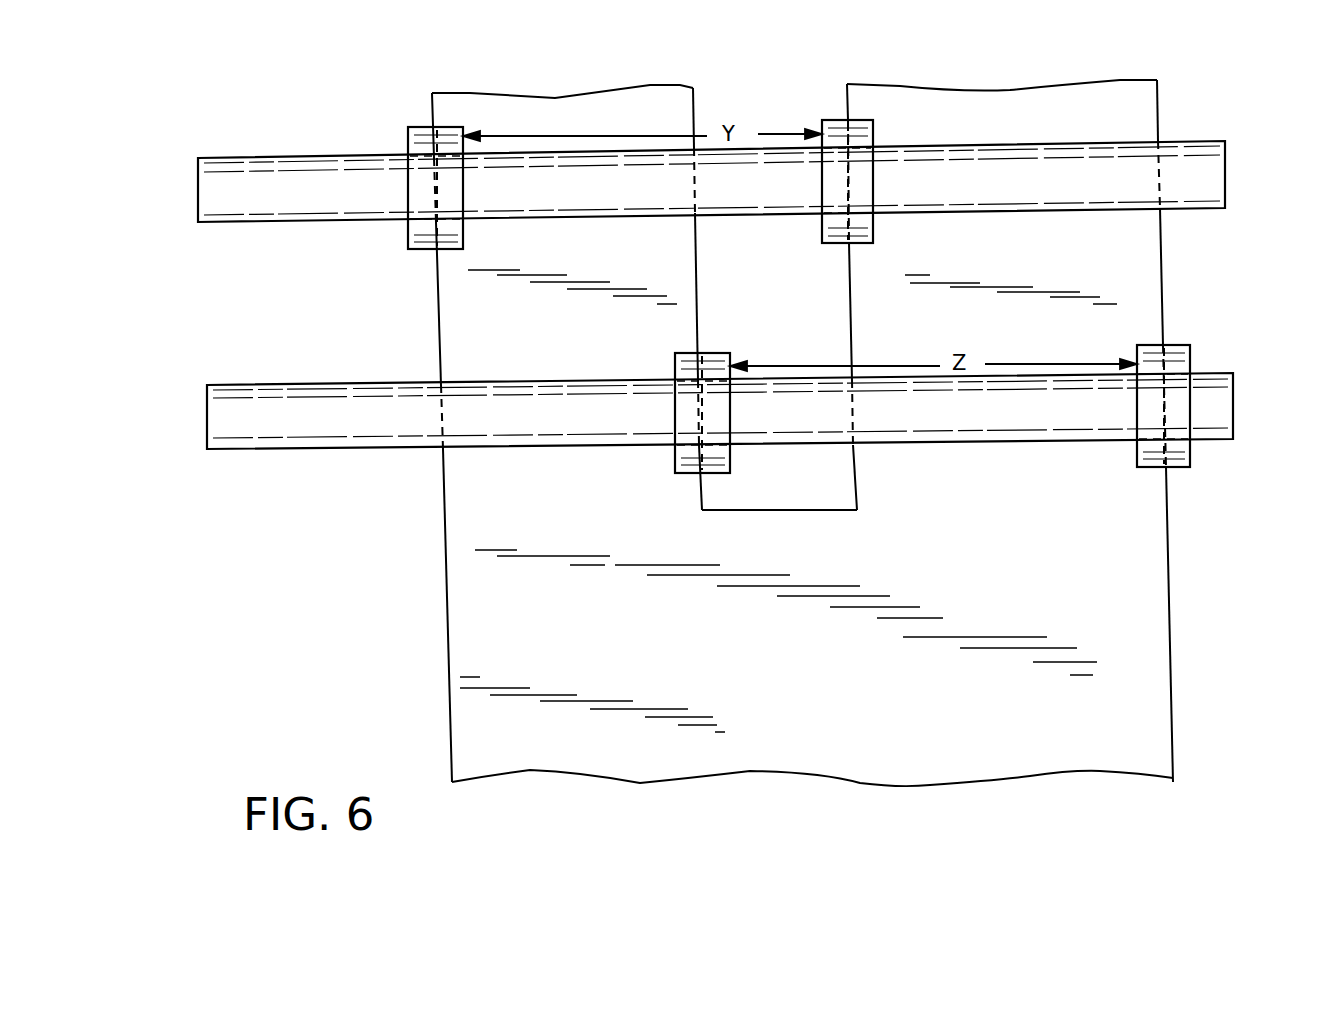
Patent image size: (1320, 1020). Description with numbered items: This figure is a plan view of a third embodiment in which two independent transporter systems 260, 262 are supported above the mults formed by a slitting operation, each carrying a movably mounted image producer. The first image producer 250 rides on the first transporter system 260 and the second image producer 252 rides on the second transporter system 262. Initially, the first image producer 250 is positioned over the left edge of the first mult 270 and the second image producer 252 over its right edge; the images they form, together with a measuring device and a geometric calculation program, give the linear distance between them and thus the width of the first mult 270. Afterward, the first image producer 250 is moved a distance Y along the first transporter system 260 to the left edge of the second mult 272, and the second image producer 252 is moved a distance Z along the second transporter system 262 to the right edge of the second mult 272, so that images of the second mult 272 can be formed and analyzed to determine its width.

The first image producer 250 is at (420, 230).
The second image producer 252 is at (680, 455).
The first transporter system 260 is at (252, 205).
The second transporter system 262 is at (273, 432).
The first mult 270 is at (485, 282).
The second mult 272 is at (1130, 272).